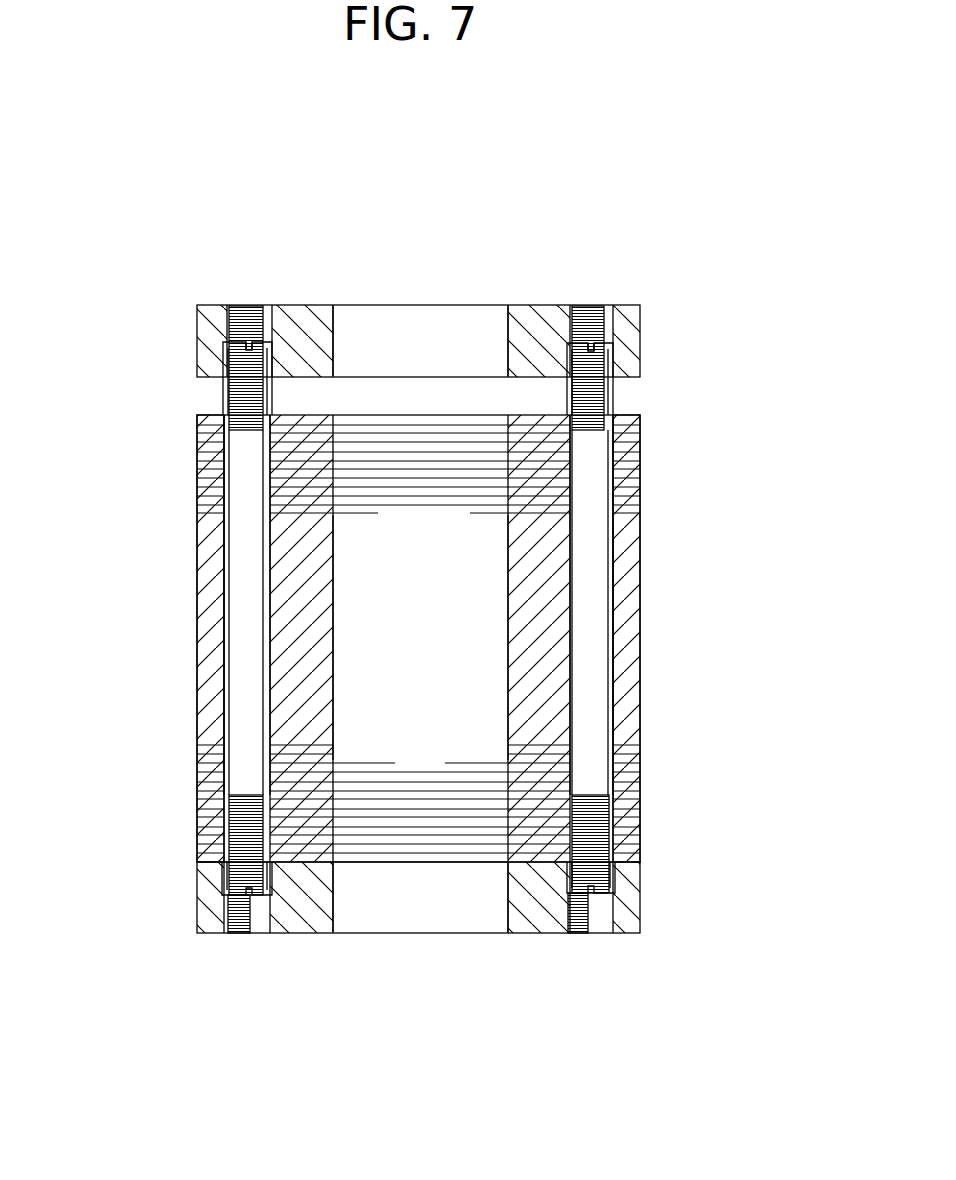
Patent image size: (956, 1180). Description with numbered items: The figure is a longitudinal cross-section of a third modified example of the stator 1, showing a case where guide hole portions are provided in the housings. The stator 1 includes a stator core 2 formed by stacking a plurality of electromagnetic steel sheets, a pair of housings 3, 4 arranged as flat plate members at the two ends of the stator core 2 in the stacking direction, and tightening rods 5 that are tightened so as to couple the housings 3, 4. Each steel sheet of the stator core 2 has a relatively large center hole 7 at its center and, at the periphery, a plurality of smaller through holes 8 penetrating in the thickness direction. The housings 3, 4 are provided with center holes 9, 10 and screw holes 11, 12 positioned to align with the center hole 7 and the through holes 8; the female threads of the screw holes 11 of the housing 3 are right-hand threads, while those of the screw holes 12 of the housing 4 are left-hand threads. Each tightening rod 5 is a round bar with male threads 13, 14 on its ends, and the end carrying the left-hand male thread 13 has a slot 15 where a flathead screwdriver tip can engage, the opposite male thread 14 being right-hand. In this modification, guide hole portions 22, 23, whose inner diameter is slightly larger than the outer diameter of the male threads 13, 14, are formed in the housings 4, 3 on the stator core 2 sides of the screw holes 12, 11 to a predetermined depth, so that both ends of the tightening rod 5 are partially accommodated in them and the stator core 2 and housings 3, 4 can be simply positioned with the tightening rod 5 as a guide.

The stator 1 is at (742, 188).
The stator core 2 is at (177, 636).
The housing 3 is at (177, 869).
The housing 4 is at (180, 323).
The tightening rod 5 is at (205, 572).
The center hole 7 is at (506, 662).
The through hole 8 is at (228, 685).
The center hole 9 is at (333, 893).
The center hole 10 is at (333, 335).
The screw hole 11 is at (256, 927).
The screw hole 12 is at (258, 314).
The male thread 13 is at (230, 400).
The male thread 14 is at (227, 813).
The slot 15 is at (248, 345).
The guide hole portion 22 is at (238, 378).
The guide hole portion 23 is at (230, 908).